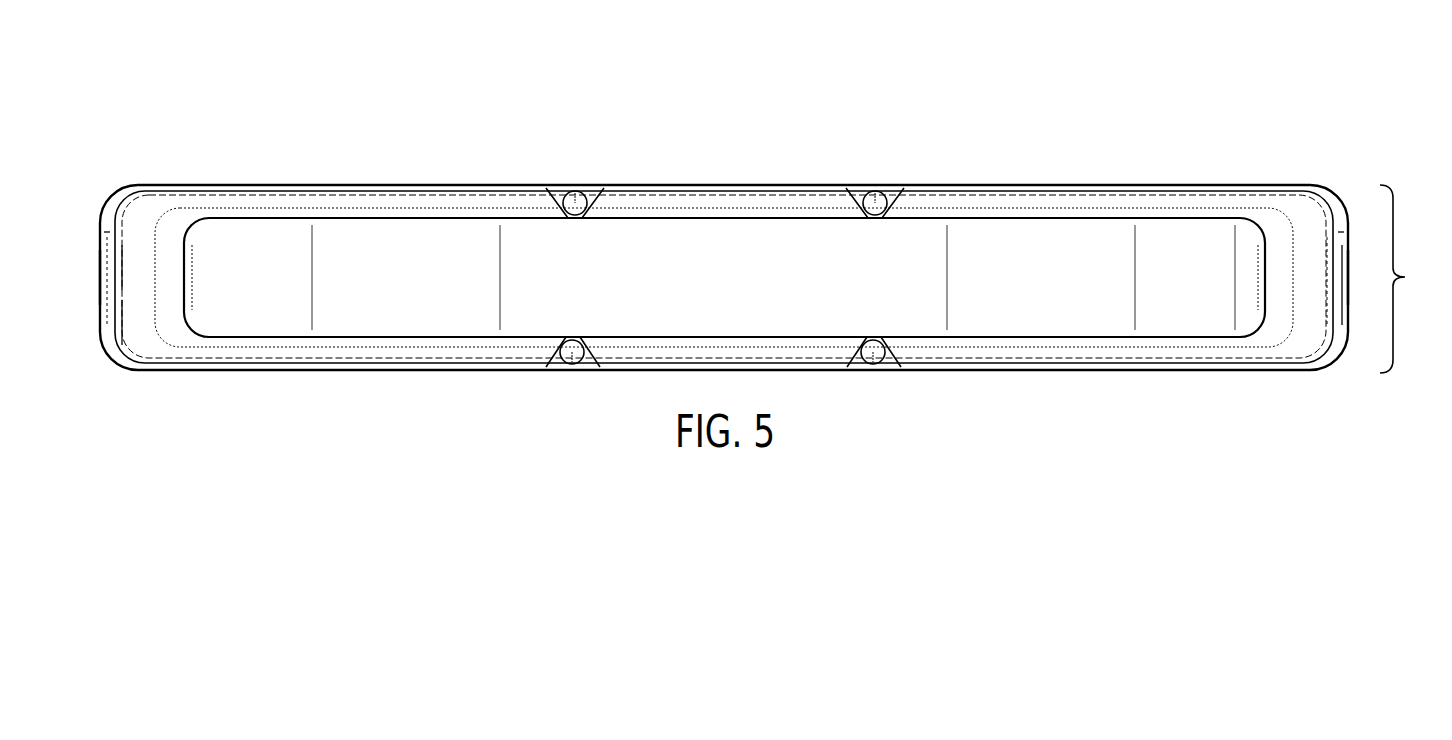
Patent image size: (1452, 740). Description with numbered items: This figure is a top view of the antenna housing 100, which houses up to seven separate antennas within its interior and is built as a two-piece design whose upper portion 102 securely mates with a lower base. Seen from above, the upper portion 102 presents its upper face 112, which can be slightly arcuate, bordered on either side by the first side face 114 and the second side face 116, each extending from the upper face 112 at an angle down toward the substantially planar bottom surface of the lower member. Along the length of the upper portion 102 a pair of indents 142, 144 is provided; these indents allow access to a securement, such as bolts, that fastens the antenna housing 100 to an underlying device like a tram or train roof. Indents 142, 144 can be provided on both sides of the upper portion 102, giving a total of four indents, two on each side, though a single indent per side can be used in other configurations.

The antenna housing 100 is at (1157, 100).
The upper portion 102 is at (1408, 279).
The upper face 112 is at (390, 256).
The first side face 114 is at (112, 280).
The second side face 116 is at (1338, 280).
The indent 142 is at (560, 366).
The indent 144 is at (852, 366).